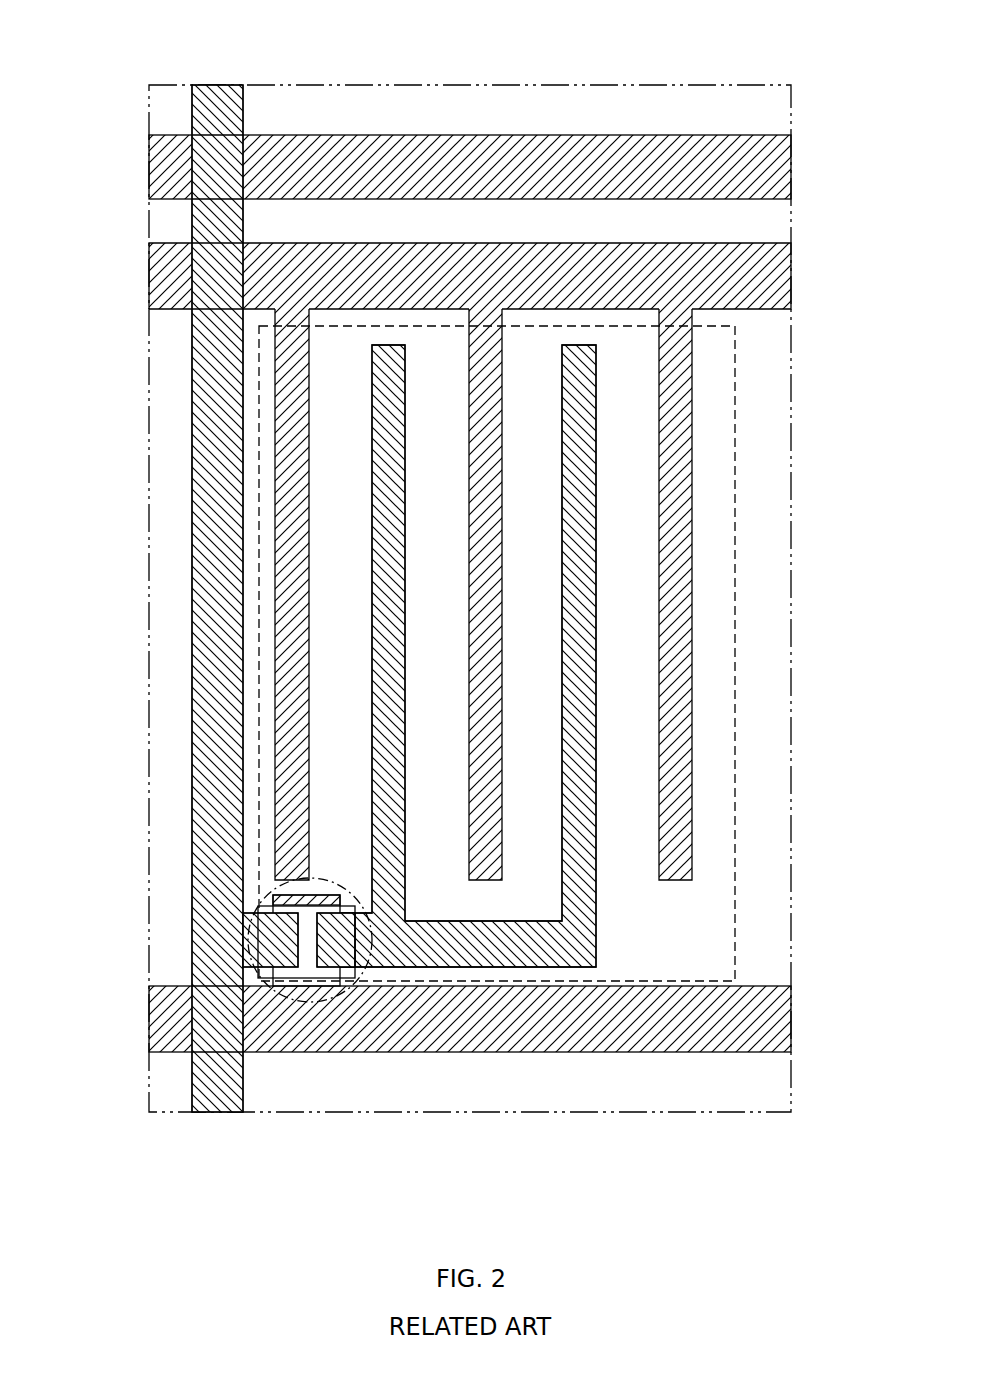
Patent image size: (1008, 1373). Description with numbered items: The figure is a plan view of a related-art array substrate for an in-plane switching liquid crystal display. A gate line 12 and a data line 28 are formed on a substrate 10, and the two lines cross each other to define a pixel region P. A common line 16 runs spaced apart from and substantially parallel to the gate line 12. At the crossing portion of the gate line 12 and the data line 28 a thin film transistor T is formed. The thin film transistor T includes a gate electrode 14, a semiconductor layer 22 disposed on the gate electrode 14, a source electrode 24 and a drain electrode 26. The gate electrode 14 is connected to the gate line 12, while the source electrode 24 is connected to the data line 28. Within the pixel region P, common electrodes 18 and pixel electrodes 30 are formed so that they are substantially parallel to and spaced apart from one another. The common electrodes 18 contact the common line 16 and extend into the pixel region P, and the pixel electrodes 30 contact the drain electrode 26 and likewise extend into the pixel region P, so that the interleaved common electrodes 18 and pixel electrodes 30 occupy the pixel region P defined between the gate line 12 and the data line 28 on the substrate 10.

The substrate 10 is at (751, 1087).
The gate line 12 is at (776, 170).
The gate electrode 14 is at (335, 893).
The common line 16 is at (775, 272).
The common electrodes 18 is at (497, 383).
The semiconductor layer 22 is at (308, 966).
The source electrode 24 is at (273, 970).
The drain electrode 26 is at (345, 968).
The data line 28 is at (223, 83).
The pixel electrodes 30 is at (597, 557).
The pixel region P is at (735, 655).
The thin film transistor T is at (248, 937).